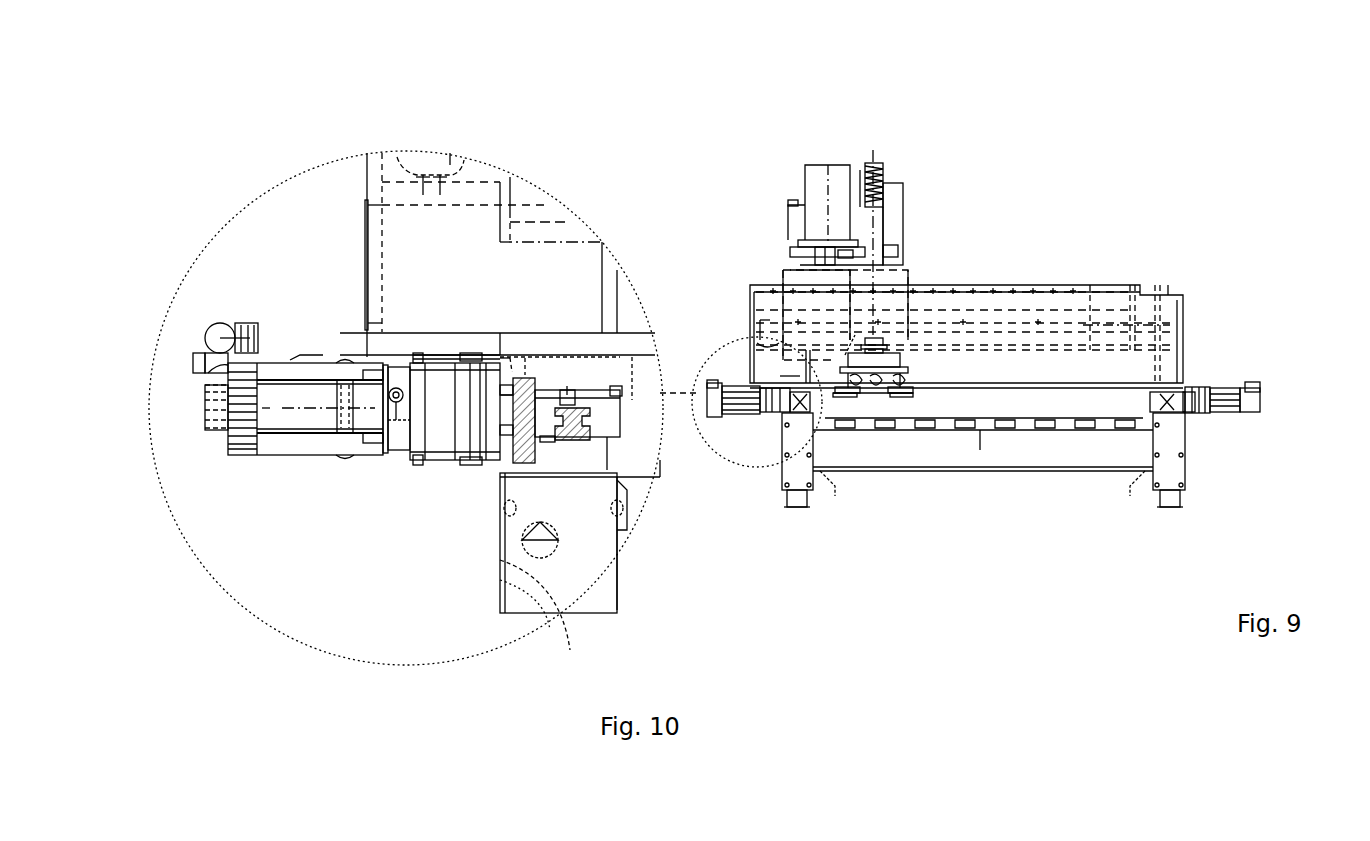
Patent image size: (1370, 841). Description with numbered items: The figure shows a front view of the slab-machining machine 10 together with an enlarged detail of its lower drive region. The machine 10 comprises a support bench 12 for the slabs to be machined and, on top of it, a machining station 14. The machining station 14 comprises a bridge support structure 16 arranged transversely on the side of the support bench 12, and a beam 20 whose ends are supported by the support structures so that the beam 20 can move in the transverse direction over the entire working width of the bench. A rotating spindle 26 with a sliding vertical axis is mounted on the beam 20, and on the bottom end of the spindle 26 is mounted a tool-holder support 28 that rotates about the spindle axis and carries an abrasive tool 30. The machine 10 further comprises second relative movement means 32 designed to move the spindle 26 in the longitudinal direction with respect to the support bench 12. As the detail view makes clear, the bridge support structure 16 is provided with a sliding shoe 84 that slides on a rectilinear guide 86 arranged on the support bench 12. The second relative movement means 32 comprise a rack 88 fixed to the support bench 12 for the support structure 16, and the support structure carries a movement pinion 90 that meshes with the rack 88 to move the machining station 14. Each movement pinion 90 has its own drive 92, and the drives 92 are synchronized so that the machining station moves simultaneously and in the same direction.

In FIG. 9, the machine 10 is at (1170, 227).
In FIG. 9, the support bench 12 is at (1178, 442).
In FIG. 9, the machining station 14 is at (853, 157).
In FIG. 9, the bridge support structure 16 is at (1177, 357).
In FIG. 9, the beam 20 is at (778, 272).
In FIG. 9, the rotating spindle 26 is at (910, 275).
In FIG. 9, the tool-holder support 28 is at (893, 355).
In FIG. 9, the abrasive tool 30 is at (905, 398).
In FIG. 9, the second relative movement means 32 is at (1203, 378).
In FIG. 10, the sliding shoe 84 is at (600, 417).
In FIG. 10, the rectilinear guide 86 is at (577, 427).
In FIG. 10, the rack 88 is at (520, 455).
In FIG. 10, the movement pinion 90 is at (528, 417).
In FIG. 10, the drive 92 is at (243, 418).
In FIG. 9, the drive 92 is at (718, 405).